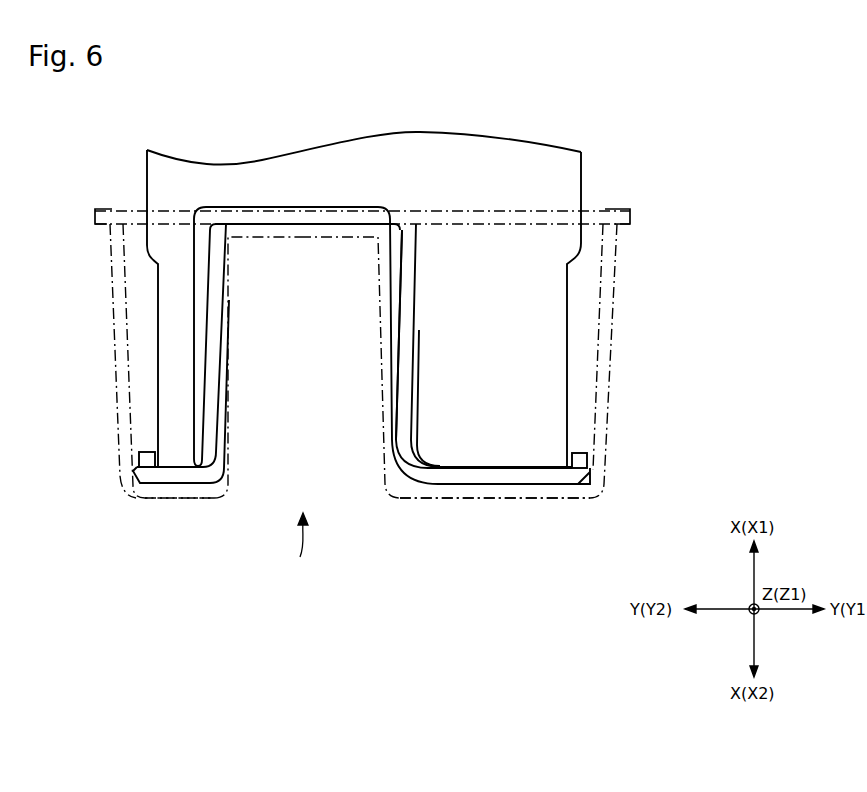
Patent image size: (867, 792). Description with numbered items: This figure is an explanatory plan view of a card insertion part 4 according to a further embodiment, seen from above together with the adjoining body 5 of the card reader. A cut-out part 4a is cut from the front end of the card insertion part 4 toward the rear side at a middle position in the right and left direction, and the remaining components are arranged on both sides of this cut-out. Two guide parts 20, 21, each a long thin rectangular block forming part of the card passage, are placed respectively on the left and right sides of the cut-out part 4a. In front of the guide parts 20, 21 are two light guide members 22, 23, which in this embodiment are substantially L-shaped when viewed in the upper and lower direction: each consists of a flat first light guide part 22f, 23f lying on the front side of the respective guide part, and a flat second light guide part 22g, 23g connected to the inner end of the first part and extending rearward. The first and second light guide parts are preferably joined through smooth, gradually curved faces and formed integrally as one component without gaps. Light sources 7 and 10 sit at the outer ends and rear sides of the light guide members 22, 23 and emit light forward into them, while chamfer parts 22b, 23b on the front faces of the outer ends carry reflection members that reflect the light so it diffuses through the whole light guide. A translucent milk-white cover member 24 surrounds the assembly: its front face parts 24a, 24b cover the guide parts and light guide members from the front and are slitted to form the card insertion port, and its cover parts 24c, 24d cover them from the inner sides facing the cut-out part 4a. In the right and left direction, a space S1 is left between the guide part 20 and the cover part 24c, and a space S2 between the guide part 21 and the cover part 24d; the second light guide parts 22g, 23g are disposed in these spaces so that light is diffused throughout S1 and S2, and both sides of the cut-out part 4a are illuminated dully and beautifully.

The card insertion part 4 is at (660, 292).
The cut-out part 4a is at (299, 547).
The case 5 is at (582, 185).
The light source 7 is at (139, 460).
The light source 10 is at (588, 462).
The guide part 20 is at (158, 335).
The guide part 21 is at (567, 343).
The light guide member 22 is at (222, 305).
The second light guide part 22g is at (202, 348).
The chamfer part 22b is at (140, 484).
The first light guide part 22f is at (162, 484).
The light guide member 23 is at (392, 330).
The second light guide part 23g is at (399, 335).
The chamfer part 23b is at (590, 480).
The first light guide part 23f is at (518, 485).
The cover member 24 is at (610, 403).
The front face part 24a is at (193, 500).
The front face part 24b is at (460, 499).
The cover part 24c is at (230, 432).
The cover part 24d is at (387, 440).
The space S1 is at (226, 388).
The space S2 is at (388, 390).